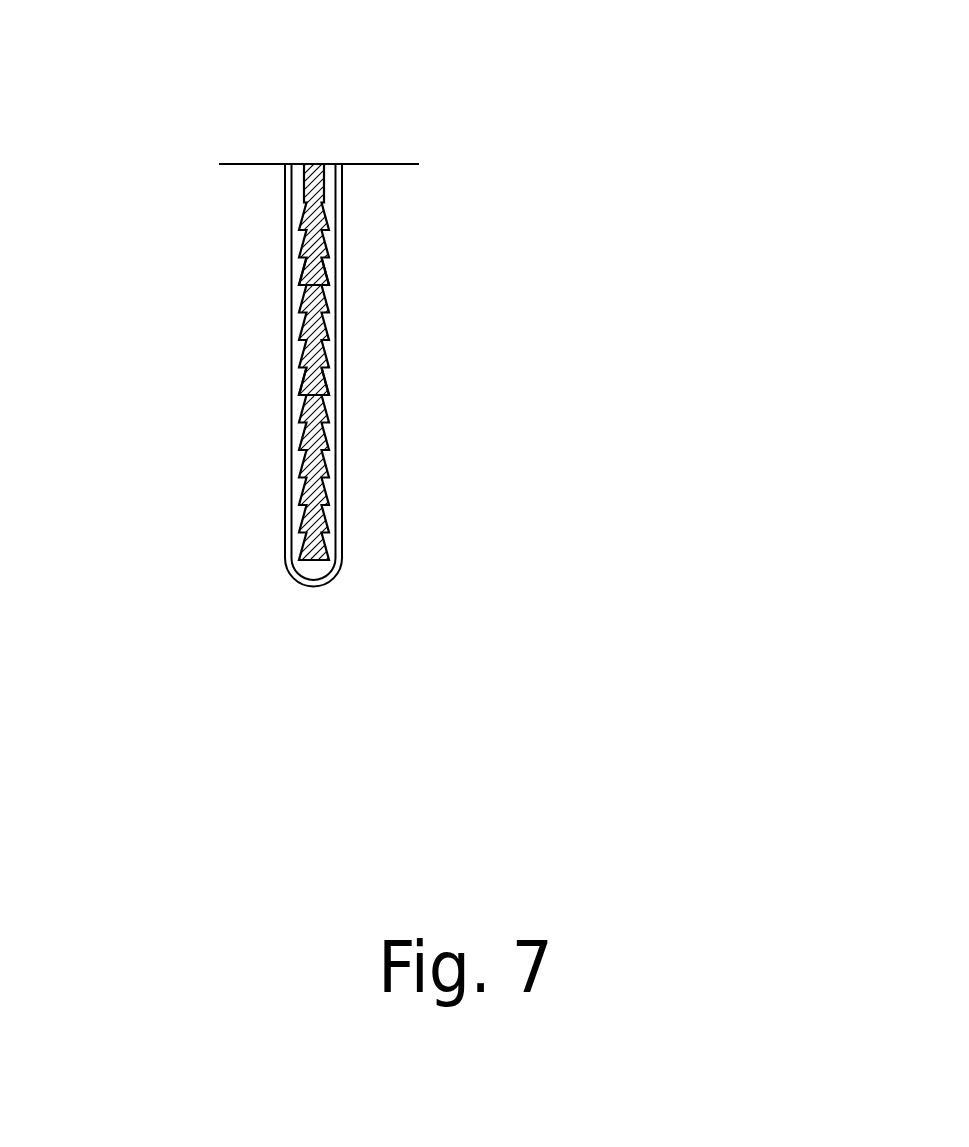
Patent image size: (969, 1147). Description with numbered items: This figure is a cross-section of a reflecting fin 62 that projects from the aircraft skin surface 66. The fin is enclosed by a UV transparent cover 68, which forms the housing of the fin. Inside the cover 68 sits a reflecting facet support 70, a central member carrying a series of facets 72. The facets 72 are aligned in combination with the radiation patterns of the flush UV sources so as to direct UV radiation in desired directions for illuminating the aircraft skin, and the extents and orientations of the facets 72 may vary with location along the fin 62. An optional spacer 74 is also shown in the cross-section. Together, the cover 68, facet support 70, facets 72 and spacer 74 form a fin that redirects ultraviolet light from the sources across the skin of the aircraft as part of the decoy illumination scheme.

The reflector fin 62 is at (367, 466).
The aircraft skin surface 66 is at (373, 164).
The cover 68 is at (287, 415).
The reflecting facet support 70 is at (312, 274).
The facet 72 is at (305, 277).
The optional spacer 74 is at (327, 380).